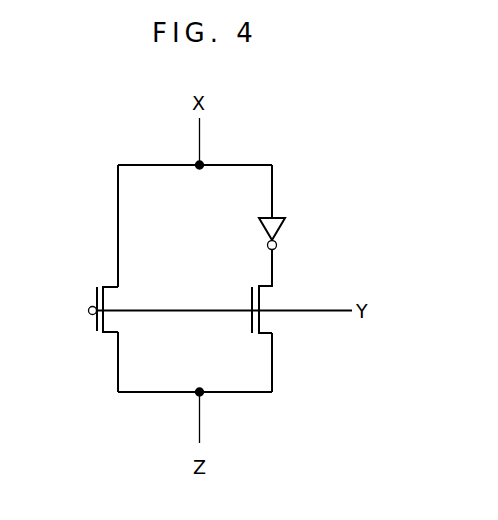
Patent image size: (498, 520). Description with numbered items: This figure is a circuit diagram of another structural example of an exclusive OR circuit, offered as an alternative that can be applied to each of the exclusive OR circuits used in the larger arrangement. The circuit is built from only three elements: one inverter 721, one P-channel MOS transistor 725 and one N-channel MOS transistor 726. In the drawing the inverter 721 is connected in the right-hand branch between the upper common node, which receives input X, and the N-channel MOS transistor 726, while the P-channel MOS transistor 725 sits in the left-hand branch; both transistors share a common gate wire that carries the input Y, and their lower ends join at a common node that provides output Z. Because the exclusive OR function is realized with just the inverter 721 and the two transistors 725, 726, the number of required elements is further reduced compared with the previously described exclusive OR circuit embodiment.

The inverter 721 is at (276, 226).
The P-channel MOS transistor 725 is at (97, 333).
The N-channel MOS transistor 726 is at (265, 318).